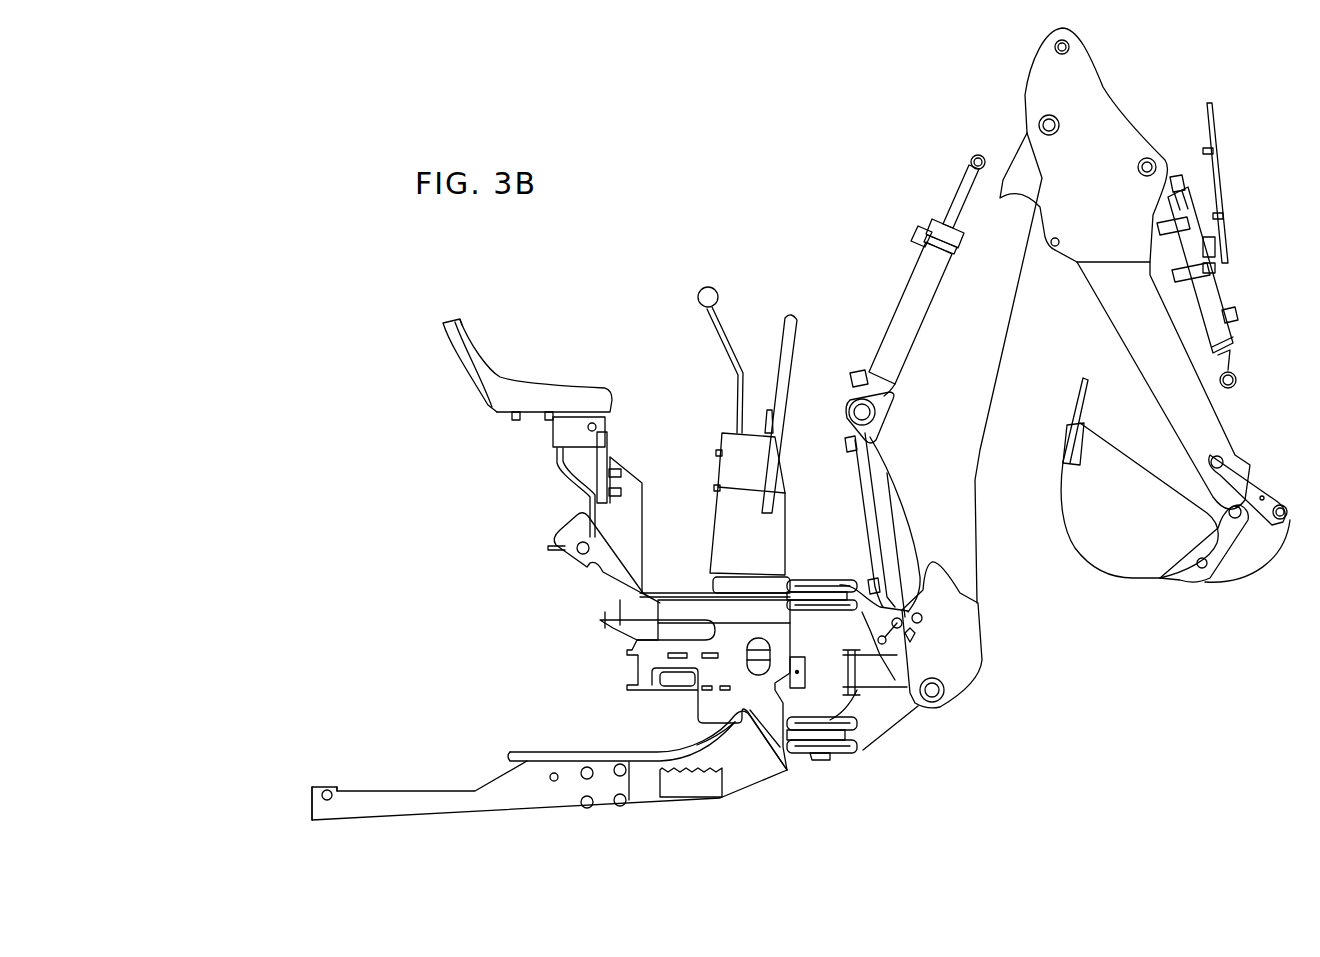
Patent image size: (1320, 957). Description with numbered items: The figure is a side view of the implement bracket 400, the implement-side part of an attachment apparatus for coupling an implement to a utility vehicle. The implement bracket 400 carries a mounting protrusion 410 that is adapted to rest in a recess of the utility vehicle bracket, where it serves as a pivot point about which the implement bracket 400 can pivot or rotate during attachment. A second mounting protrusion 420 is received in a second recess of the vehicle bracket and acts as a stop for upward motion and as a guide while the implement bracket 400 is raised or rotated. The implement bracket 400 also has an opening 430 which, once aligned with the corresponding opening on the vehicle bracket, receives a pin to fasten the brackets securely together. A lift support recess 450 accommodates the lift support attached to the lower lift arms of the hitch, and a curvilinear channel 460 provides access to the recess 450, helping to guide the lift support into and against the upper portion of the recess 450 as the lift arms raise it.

The implement bracket 400 is at (722, 813).
The mounting protrusion 410 is at (320, 786).
The second mounting protrusion 420 is at (551, 781).
The opening 430 is at (573, 550).
The lift support recess 450 is at (790, 752).
The channel 460 is at (700, 745).